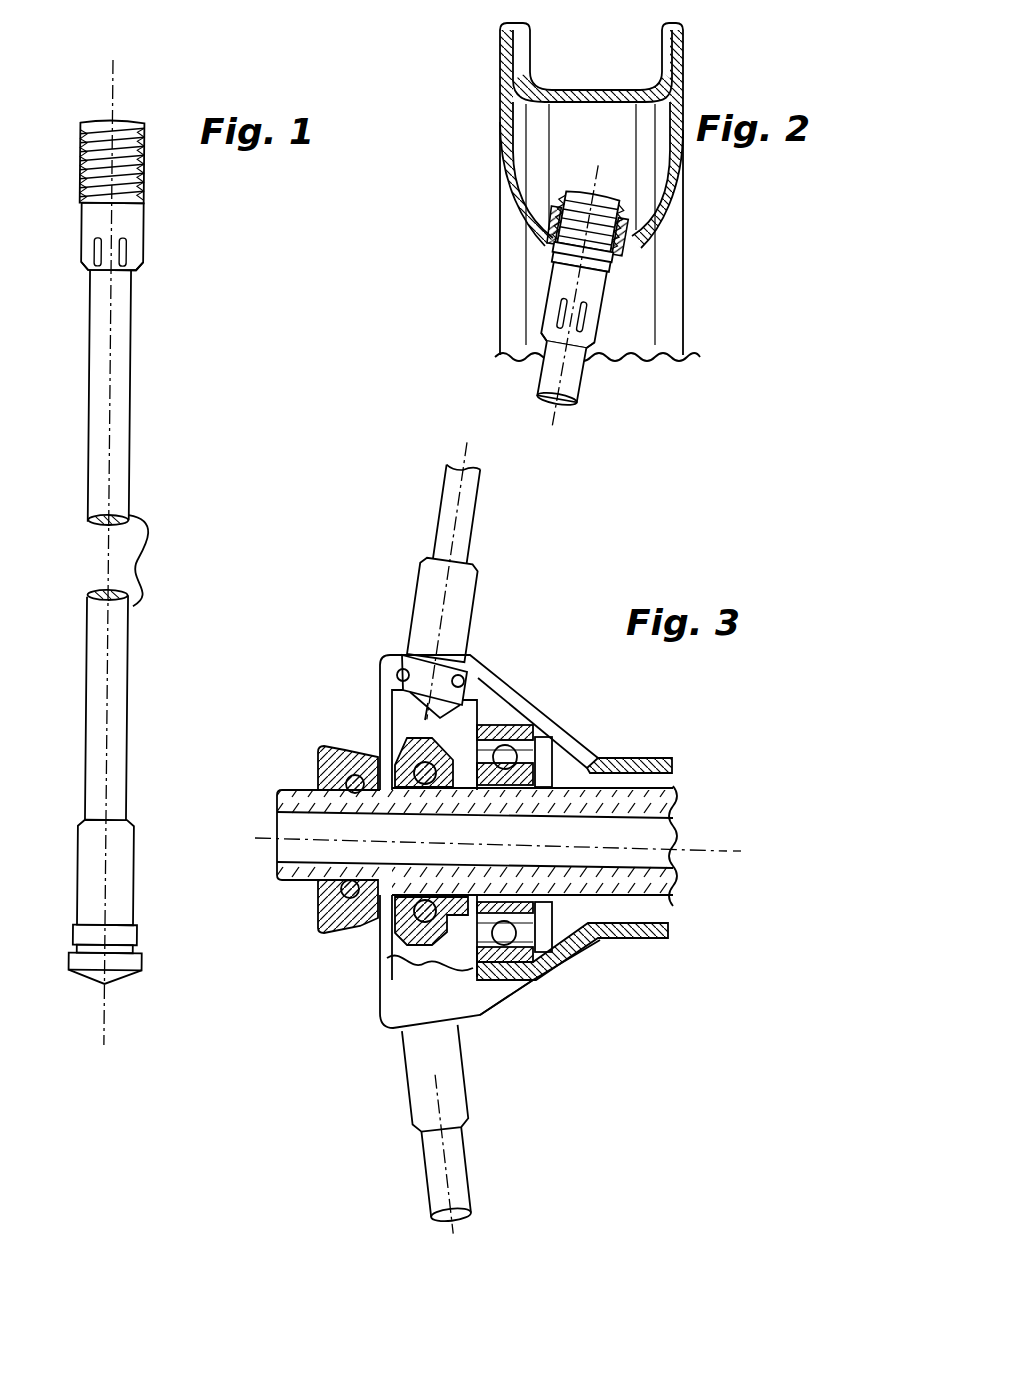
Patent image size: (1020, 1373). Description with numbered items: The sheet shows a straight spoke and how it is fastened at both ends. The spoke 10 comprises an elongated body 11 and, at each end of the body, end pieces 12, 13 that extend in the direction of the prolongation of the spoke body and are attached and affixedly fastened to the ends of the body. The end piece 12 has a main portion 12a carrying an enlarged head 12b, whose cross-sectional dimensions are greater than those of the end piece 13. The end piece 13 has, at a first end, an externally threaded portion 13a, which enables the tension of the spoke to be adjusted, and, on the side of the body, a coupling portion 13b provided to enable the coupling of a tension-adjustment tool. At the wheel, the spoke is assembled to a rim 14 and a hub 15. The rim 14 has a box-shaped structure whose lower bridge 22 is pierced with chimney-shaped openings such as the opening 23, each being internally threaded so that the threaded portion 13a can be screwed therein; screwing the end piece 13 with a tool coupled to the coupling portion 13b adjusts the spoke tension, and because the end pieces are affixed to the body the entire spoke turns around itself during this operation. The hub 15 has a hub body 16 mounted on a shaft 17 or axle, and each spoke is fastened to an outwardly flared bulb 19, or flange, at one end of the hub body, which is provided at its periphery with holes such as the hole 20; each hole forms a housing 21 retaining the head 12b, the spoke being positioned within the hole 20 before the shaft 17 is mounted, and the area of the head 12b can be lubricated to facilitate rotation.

In FIG. 1, the spoke 10 is at (134, 440).
In FIG. 2, the spoke 10 is at (568, 383).
In FIG. 1, the elongated body 11 is at (150, 555).
In FIG. 1, the end piece 12 is at (140, 880).
In FIG. 3, the end piece 12 is at (457, 612).
In FIG. 1, the main portion 12a is at (140, 832).
In FIG. 1, the enlarged head 12b is at (146, 958).
In FIG. 3, the enlarged head 12b is at (480, 712).
In FIG. 1, the end piece 13 is at (146, 238).
In FIG. 2, the end piece 13 is at (560, 290).
In FIG. 1, the externally threaded portion 13a is at (145, 187).
In FIG. 2, the externally threaded portion 13a is at (563, 224).
In FIG. 1, the coupling portion 13b is at (146, 265).
In FIG. 2, the coupling portion 13b is at (552, 326).
In FIG. 2, the rim 14 is at (498, 127).
In FIG. 3, the hub 15 is at (642, 940).
In FIG. 3, the hub body 16 is at (590, 938).
In FIG. 3, the shaft 17 is at (300, 880).
In FIG. 3, the bulb 19 is at (548, 706).
In FIG. 3, the hole 20 is at (450, 698).
In FIG. 3, the housing 21 is at (385, 700).
In FIG. 2, the lower bridge 22 is at (545, 246).
In FIG. 2, the opening 23 is at (632, 242).